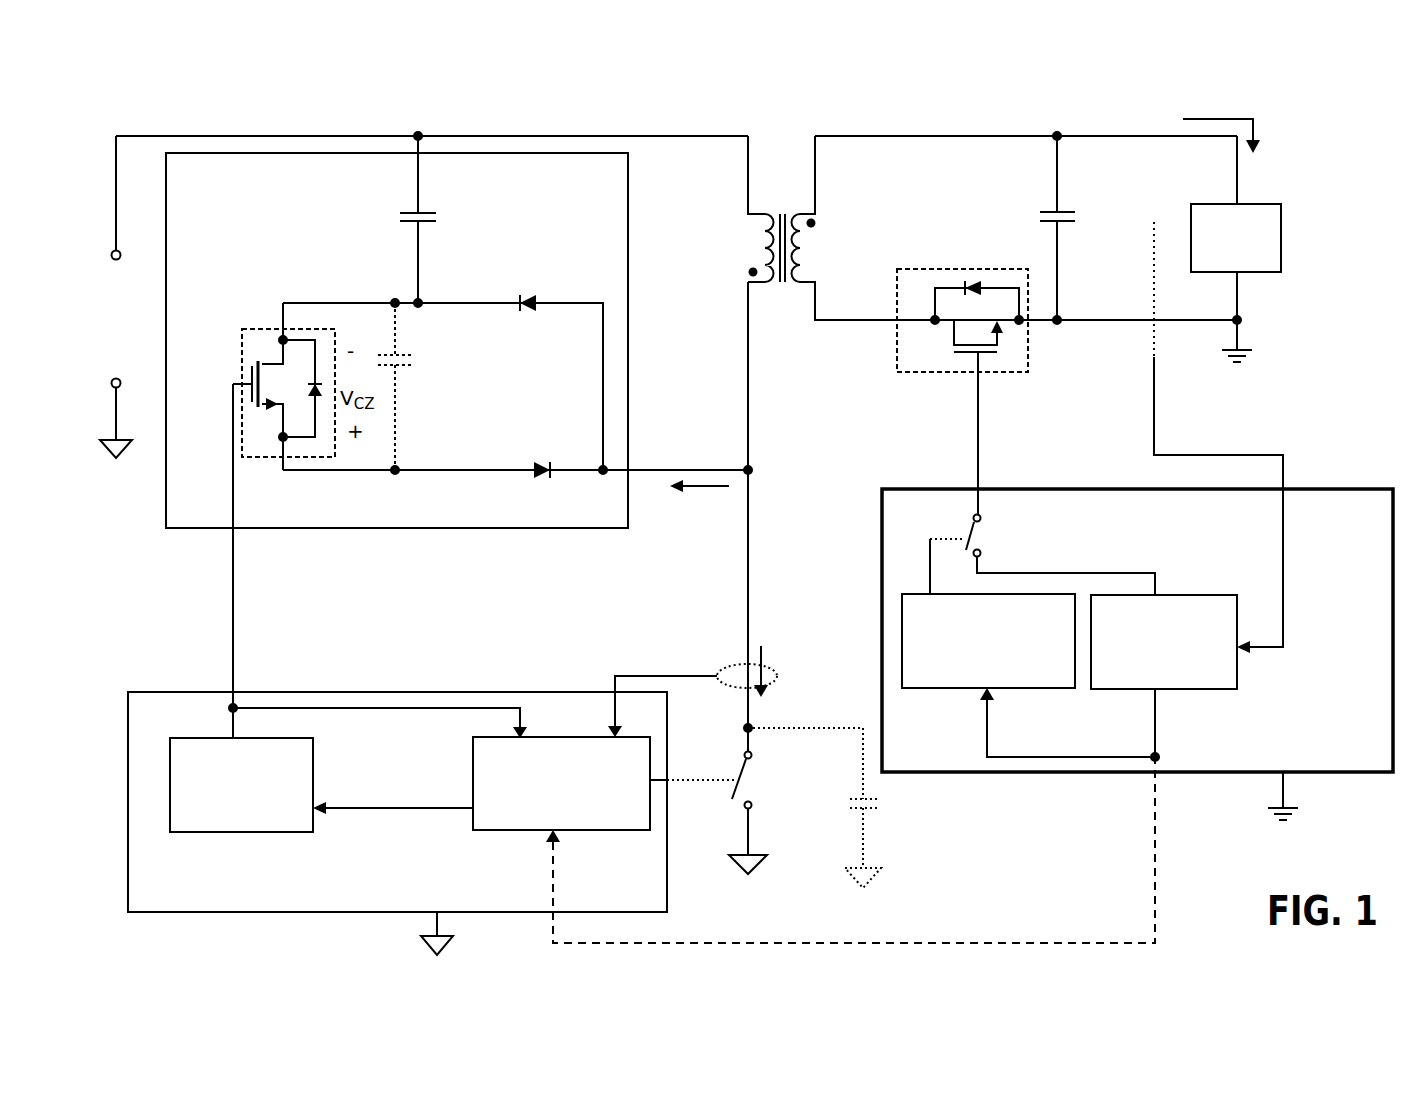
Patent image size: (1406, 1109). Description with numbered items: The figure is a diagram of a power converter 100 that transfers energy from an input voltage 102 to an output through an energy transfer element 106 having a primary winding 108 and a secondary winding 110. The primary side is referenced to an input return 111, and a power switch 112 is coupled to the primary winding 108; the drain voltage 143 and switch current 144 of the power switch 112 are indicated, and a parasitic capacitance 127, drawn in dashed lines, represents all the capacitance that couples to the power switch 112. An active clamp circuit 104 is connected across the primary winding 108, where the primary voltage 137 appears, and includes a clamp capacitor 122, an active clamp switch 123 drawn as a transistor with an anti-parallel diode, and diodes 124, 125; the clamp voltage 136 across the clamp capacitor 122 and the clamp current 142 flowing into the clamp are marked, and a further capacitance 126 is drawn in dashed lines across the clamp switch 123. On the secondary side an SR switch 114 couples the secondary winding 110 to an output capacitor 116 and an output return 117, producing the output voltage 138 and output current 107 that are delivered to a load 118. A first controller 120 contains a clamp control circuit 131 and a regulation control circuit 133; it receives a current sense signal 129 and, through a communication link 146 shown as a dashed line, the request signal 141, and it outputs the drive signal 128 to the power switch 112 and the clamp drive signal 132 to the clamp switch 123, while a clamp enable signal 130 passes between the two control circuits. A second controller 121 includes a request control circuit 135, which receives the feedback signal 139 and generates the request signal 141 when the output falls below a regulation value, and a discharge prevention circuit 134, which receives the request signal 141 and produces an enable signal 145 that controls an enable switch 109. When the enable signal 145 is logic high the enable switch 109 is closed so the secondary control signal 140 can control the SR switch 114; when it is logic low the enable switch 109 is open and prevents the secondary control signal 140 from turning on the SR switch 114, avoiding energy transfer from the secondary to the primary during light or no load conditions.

The power converter 100 is at (1383, 79).
The input voltage 102 is at (84, 306).
The active clamp circuit 104 is at (452, 530).
The energy transfer element 106 is at (784, 166).
The output current 107 is at (1186, 88).
The primary winding 108 is at (740, 211).
The enable switch 109 is at (988, 550).
The secondary winding 110 is at (810, 263).
The input return 111 is at (118, 462).
The power switch 112 is at (779, 802).
The SR switch 114 is at (968, 268).
The output capacitor 116 is at (1036, 201).
The output return 117 is at (1254, 356).
The load 118 is at (1283, 234).
The first controller 120 is at (157, 915).
The second controller 121 is at (906, 486).
The clamp capacitor 122 is at (405, 232).
The active clamp switch 123 is at (264, 462).
The diode 124 is at (528, 296).
The diode 125 is at (541, 463).
The parasitic capacitance CP2 126 is at (412, 370).
The parasitic capacitance 127 is at (890, 820).
The drive signal 128 is at (690, 783).
The current sense signal 129 is at (613, 630).
The clamp enable signal 130 is at (390, 782).
The clamp control circuit 131 is at (316, 832).
The clamp drive signal 132 is at (290, 624).
The regulation control circuit 133 is at (603, 838).
The discharge prevention circuit 134 is at (919, 694).
The request control circuit 135 is at (1200, 592).
The clamp voltage 136 is at (492, 216).
The primary voltage 137 is at (708, 240).
The output voltage 138 is at (1102, 202).
The feedback signal 139 is at (1206, 410).
The secondary control signal 140 is at (1086, 561).
The request signal 141 is at (1052, 740).
The clamp current 142 is at (690, 534).
The drain voltage 143 is at (777, 492).
The switch current 144 is at (788, 642).
The enable signal 145 is at (905, 546).
The communication link 146 is at (990, 942).